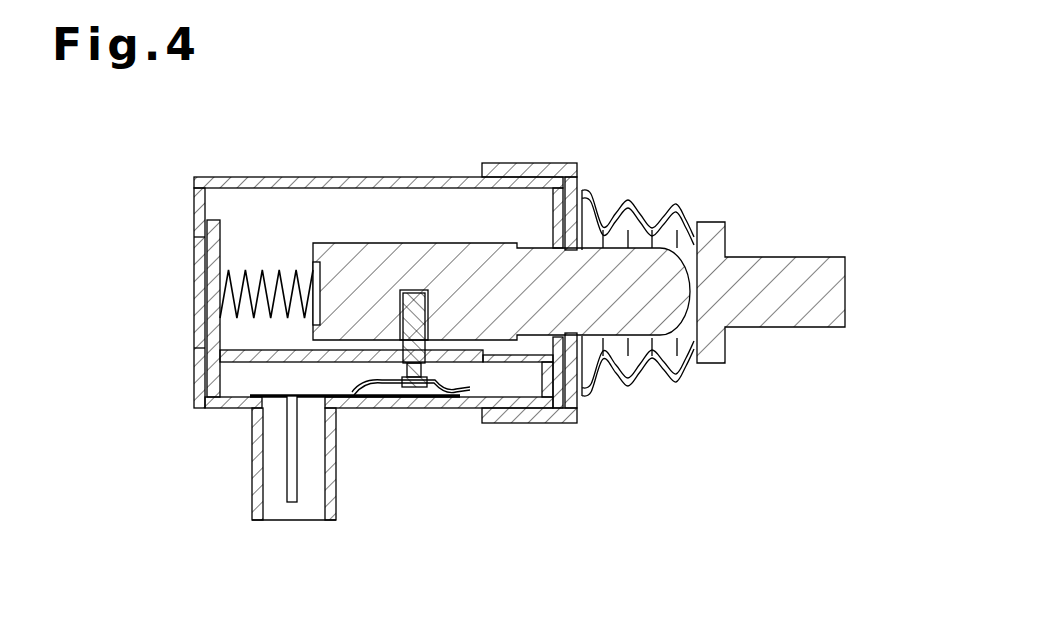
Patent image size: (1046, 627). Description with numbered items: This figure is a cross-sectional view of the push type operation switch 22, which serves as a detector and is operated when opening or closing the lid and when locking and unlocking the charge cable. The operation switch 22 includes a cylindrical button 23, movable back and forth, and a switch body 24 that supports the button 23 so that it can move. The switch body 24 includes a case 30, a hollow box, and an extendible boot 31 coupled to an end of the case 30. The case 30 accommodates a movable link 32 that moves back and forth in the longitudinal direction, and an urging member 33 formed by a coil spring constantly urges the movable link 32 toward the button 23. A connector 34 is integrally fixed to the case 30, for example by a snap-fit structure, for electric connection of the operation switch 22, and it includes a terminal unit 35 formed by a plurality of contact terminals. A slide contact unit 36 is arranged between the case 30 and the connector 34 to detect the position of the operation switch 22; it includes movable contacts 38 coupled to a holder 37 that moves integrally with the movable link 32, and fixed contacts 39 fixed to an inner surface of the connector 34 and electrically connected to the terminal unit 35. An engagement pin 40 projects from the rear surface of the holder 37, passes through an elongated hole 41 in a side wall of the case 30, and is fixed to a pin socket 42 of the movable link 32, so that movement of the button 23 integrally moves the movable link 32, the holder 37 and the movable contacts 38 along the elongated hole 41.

The operation switch 22 is at (151, 156).
The button 23 is at (812, 257).
The switch body 24 is at (245, 177).
The case 30 is at (420, 177).
The boot 31 is at (622, 197).
The movable link 32 is at (365, 243).
The urging member 33 is at (258, 270).
The connector 34 is at (337, 486).
The terminal unit 35 is at (289, 502).
The slide contact unit 36 is at (489, 354).
The holder 37 is at (347, 372).
The movable contacts 38 is at (450, 378).
The fixed contacts 39 is at (450, 398).
The engagement pin 40 is at (409, 300).
The elongated hole 41 is at (339, 350).
The pin socket 42 is at (415, 292).